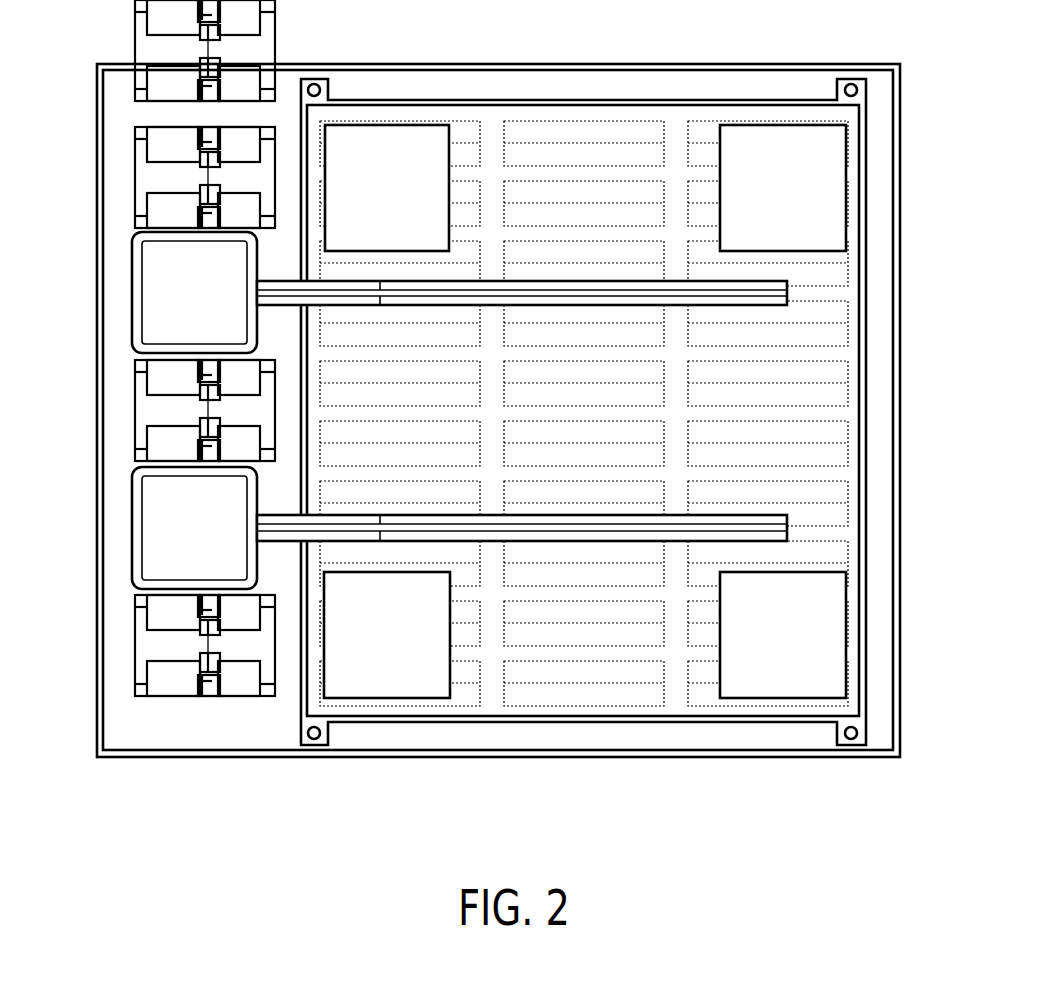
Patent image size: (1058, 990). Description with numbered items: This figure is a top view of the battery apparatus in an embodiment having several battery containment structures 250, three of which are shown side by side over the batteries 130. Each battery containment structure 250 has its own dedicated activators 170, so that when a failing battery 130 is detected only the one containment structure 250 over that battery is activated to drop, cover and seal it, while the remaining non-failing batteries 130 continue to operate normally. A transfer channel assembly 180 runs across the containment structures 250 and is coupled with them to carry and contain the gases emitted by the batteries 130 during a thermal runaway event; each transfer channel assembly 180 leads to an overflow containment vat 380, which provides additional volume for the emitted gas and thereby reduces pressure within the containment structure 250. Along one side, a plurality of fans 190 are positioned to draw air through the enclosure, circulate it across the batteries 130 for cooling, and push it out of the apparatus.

The battery 130 is at (807, 340).
The activator 170 is at (808, 197).
The transfer channel assembly 180 is at (565, 537).
The fan 190 is at (140, 183).
The battery containment structure 250 is at (405, 117).
The overflow containment vat 380 is at (147, 320).